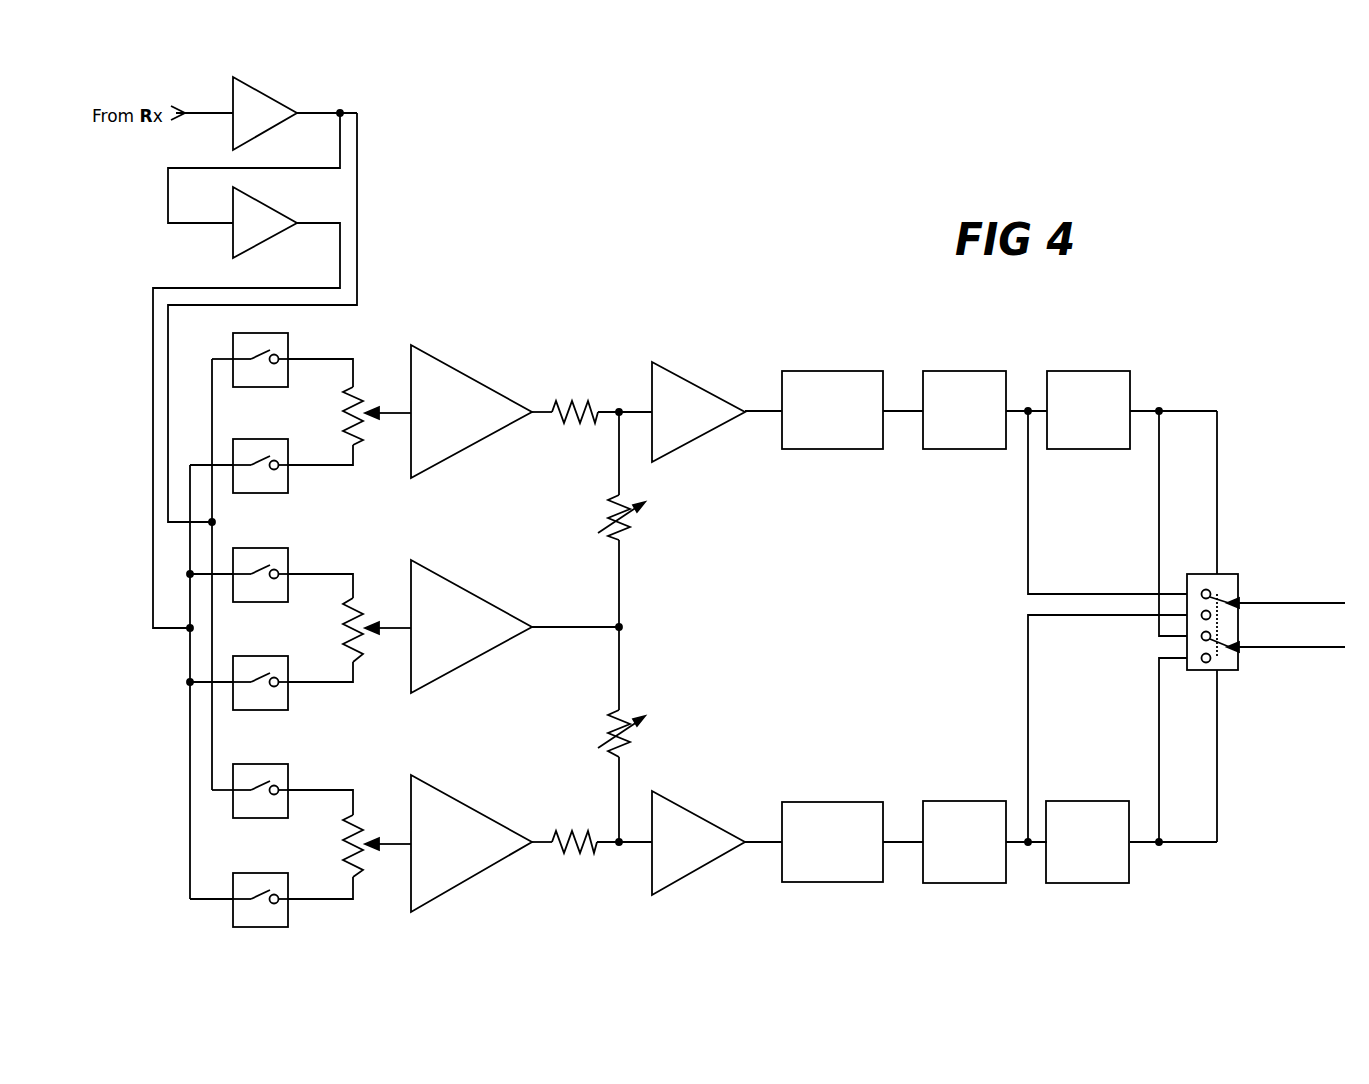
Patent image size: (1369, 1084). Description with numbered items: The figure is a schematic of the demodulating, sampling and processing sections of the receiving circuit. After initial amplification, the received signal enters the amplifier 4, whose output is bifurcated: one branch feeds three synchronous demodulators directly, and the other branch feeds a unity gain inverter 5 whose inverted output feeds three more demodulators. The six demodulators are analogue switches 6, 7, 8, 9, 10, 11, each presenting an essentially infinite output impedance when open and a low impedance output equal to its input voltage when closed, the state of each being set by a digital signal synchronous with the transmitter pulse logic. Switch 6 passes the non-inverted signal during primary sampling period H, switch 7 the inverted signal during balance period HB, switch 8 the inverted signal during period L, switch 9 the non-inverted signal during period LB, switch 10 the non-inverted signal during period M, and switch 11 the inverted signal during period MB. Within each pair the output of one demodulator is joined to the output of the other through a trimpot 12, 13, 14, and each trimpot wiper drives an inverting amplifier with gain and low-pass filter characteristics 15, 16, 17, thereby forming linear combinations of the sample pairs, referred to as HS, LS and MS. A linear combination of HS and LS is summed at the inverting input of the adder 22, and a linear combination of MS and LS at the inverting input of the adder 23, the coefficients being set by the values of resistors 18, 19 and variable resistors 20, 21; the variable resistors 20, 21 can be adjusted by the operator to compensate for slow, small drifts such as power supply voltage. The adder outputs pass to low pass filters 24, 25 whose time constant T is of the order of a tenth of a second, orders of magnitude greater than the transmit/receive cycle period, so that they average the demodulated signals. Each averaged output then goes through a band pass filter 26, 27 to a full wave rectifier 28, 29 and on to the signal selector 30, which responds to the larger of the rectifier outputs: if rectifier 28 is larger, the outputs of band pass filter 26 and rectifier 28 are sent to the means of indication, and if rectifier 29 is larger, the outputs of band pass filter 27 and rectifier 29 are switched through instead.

The amplifier 4 is at (273, 102).
The unity gain inverter 5 is at (230, 238).
The analogue switch 6 is at (288, 337).
The analogue switch 7 is at (288, 440).
The analogue switch 8 is at (288, 548).
The analogue switch 9 is at (288, 656).
The analogue switch 10 is at (288, 764).
The analogue switch 11 is at (273, 871).
The trimpot 12 is at (365, 395).
The trimpot 13 is at (365, 605).
The trimpot 14 is at (357, 870).
The inverting amplifier with gain and low-pass filter characteristics 15 is at (465, 372).
The inverting amplifier with gain and low-pass filter characteristics 16 is at (467, 588).
The inverting amplifier with gain and low-pass filter characteristics 17 is at (485, 865).
The resistor 18 is at (580, 402).
The resistor 19 is at (580, 850).
The variable resistor 20 is at (630, 528).
The variable resistor 21 is at (630, 733).
The adder 22 is at (695, 378).
The adder 23 is at (700, 865).
The low pass filter 24 is at (843, 370).
The low pass filter 25 is at (863, 882).
The band pass filter 26 is at (966, 370).
The band pass filter 27 is at (997, 883).
The full wave rectifier 28 is at (1080, 370).
The full wave rectifier 29 is at (1130, 880).
The signal selector 30 is at (1230, 672).